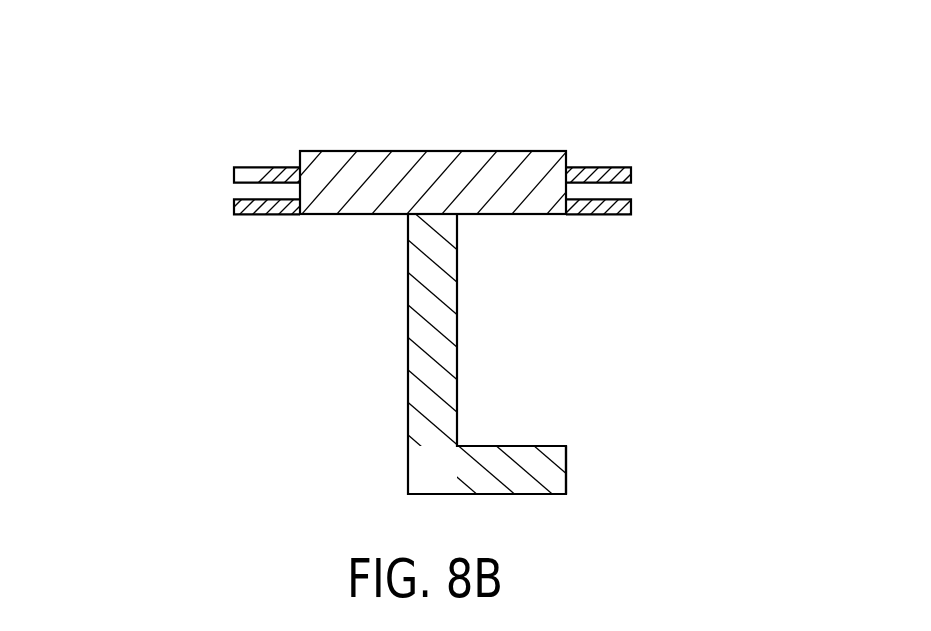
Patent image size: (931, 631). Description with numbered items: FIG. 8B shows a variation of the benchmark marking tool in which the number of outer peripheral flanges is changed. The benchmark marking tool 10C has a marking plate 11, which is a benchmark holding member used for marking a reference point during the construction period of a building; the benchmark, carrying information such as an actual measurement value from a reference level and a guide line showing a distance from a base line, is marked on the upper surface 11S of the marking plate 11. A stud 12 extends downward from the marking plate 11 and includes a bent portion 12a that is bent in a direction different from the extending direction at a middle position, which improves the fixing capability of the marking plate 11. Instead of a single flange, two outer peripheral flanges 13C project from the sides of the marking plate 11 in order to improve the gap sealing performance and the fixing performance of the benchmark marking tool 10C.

The benchmark marking tool 10C is at (554, 86).
The marking plate 11 is at (357, 215).
The upper surface 11S is at (433, 151).
The stud 12 is at (457, 352).
The bent portion 12a is at (567, 468).
The outer peripheral flanges 13C is at (234, 176).